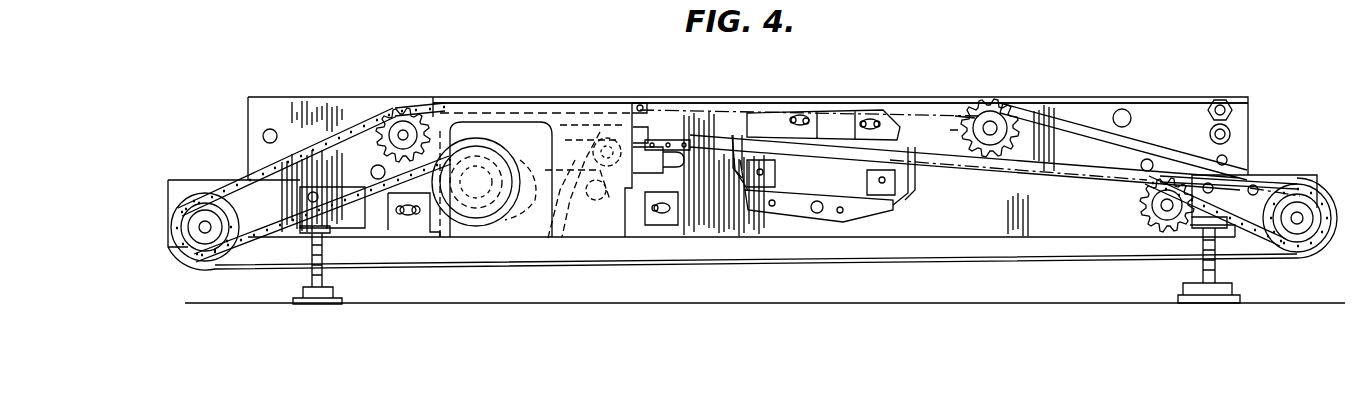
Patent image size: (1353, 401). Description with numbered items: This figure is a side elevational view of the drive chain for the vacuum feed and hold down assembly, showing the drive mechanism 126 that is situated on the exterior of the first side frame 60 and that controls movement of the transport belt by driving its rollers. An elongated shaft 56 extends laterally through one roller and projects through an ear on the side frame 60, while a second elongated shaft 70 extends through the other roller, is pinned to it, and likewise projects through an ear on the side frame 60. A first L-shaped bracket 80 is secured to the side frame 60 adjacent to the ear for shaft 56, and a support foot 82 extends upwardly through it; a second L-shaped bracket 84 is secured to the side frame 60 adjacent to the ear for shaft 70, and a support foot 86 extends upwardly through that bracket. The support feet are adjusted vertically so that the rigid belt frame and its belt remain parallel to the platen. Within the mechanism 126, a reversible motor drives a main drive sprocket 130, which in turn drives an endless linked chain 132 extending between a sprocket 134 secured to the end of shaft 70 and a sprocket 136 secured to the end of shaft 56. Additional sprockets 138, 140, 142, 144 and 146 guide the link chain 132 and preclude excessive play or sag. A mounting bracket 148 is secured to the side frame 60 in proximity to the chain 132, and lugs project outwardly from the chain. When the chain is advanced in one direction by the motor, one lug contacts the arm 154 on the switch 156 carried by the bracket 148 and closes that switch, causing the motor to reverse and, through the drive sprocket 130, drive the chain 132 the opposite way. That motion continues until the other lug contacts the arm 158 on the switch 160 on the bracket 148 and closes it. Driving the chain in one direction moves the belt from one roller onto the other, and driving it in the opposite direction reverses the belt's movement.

The elongated shaft 56 is at (1298, 222).
The first side frame 60 is at (1146, 107).
The elongated shaft 70 is at (205, 225).
The first L-shaped bracket 80 is at (1232, 190).
The support foot 82 is at (1200, 271).
The second L-shaped bracket 84 is at (352, 202).
The support foot 86 is at (306, 273).
The drive mechanism 126 is at (442, 228).
The main drive sprocket 130 is at (486, 232).
The endless linked chain 132 is at (695, 105).
The sprocket 134 is at (230, 181).
The sprocket 136 is at (1280, 197).
The sprocket 138 is at (1142, 209).
The sprocket 140 is at (1016, 124).
The sprocket 142 is at (642, 170).
The sprocket 144 is at (492, 179).
The sprocket 146 is at (410, 72).
The mounting bracket 148 is at (836, 192).
The arm 154 is at (931, 140).
The switch 156 is at (893, 201).
The arm 158 is at (742, 130).
The switch 160 is at (750, 194).